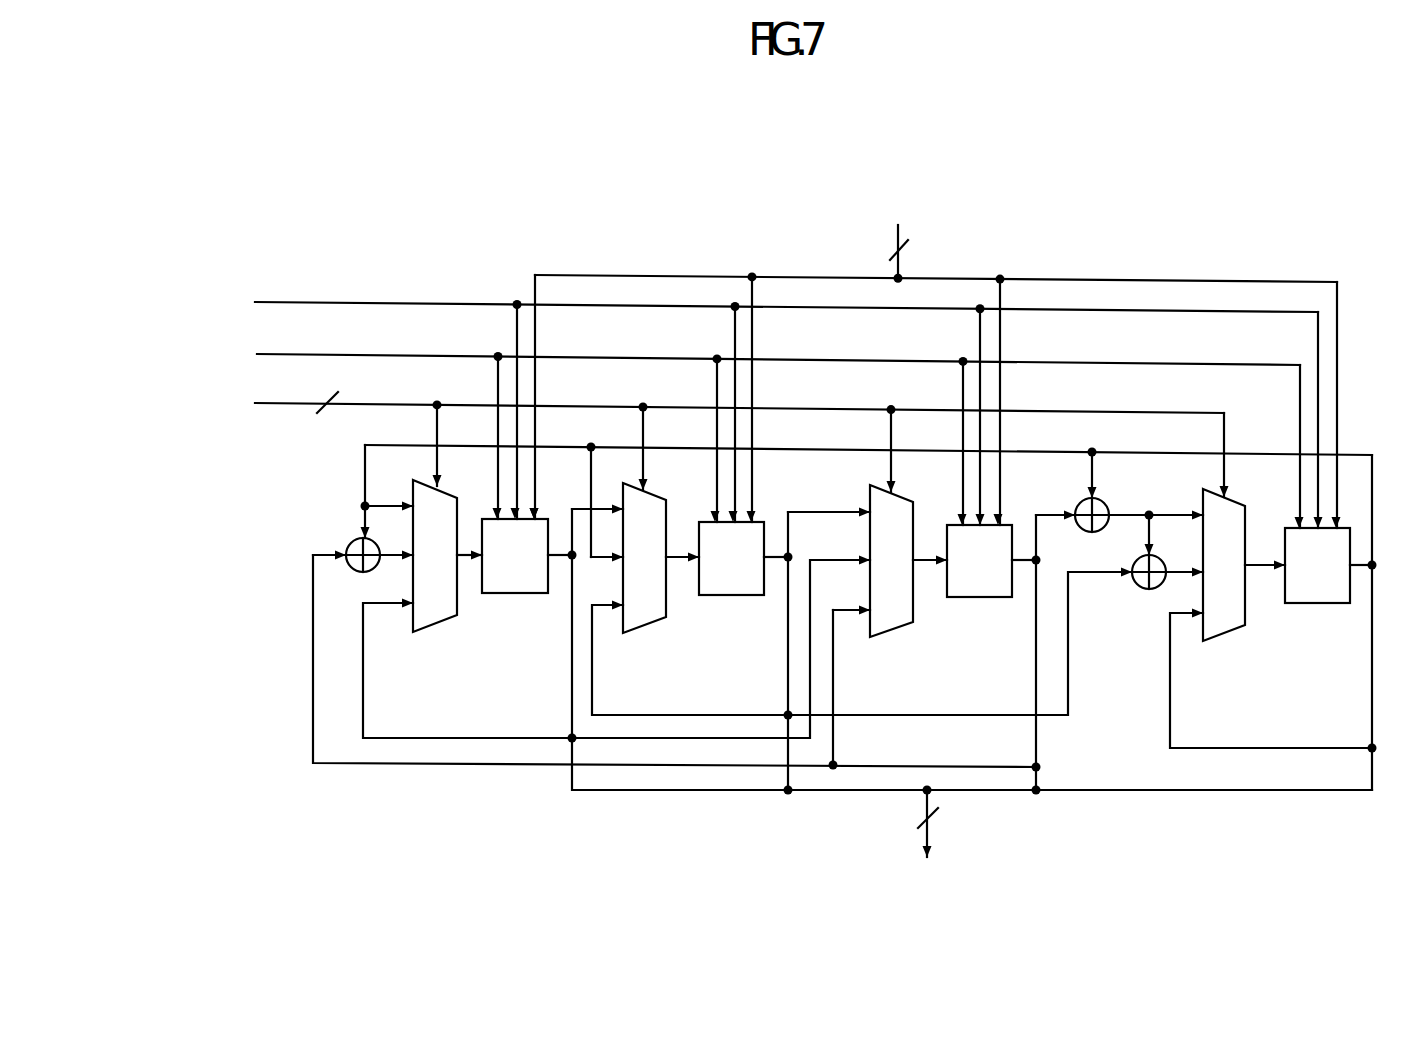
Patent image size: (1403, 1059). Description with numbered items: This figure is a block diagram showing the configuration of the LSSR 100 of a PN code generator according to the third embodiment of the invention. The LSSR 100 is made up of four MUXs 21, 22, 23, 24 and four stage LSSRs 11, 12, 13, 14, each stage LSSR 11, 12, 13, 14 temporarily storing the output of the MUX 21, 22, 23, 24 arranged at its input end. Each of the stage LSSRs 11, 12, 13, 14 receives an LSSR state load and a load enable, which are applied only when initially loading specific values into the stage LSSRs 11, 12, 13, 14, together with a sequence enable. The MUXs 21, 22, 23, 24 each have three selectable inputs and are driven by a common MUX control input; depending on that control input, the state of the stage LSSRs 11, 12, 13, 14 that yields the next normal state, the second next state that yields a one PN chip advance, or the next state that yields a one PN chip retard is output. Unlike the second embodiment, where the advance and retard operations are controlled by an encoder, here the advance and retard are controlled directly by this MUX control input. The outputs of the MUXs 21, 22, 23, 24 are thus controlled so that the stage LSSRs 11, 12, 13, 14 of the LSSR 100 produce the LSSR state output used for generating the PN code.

The LSSR 100 is at (743, 517).
The LSSR stage 11 is at (515, 593).
The LSSR stage 12 is at (733, 595).
The LSSR stage 13 is at (980, 597).
The LSSR stage 14 is at (1315, 603).
The MUX 21 is at (437, 614).
The MUX 22 is at (645, 616).
The MUX 23 is at (892, 620).
The MUX 24 is at (1226, 623).